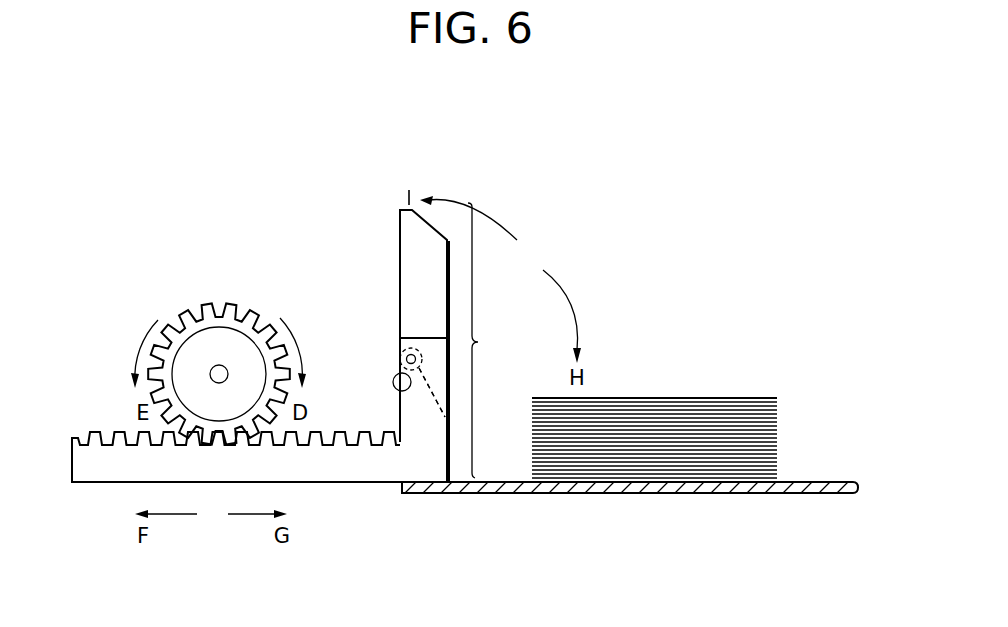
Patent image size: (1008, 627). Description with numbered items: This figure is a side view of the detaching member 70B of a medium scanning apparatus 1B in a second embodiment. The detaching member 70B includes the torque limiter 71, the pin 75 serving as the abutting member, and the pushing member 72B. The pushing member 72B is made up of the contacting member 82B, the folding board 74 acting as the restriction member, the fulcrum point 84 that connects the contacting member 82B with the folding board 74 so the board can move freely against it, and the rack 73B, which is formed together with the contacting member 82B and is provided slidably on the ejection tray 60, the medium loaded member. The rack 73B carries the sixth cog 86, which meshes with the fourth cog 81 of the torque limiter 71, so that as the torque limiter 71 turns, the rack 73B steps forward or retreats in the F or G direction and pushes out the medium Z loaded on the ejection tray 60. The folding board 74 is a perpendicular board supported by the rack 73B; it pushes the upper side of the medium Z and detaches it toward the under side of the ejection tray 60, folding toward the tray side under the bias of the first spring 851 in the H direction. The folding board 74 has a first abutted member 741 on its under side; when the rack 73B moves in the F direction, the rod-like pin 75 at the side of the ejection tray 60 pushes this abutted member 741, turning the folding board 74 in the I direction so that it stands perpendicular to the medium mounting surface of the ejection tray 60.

The recording apparatus 1B is at (197, 224).
The ejection tray 60 is at (828, 481).
The detaching member 70B is at (642, 242).
The torque limiter 71 is at (257, 330).
The pushing member 72B is at (498, 340).
The rack 73B is at (72, 438).
The folding board 74 is at (400, 230).
The first abutted member 741 is at (433, 402).
The pin 75 is at (397, 377).
The fourth cog 81 is at (185, 313).
The contacting member 82B is at (452, 462).
The fulcrum point 84 is at (410, 353).
The first spring 851 is at (422, 358).
The sixth cog 86 is at (122, 433).
The medium Z is at (708, 398).